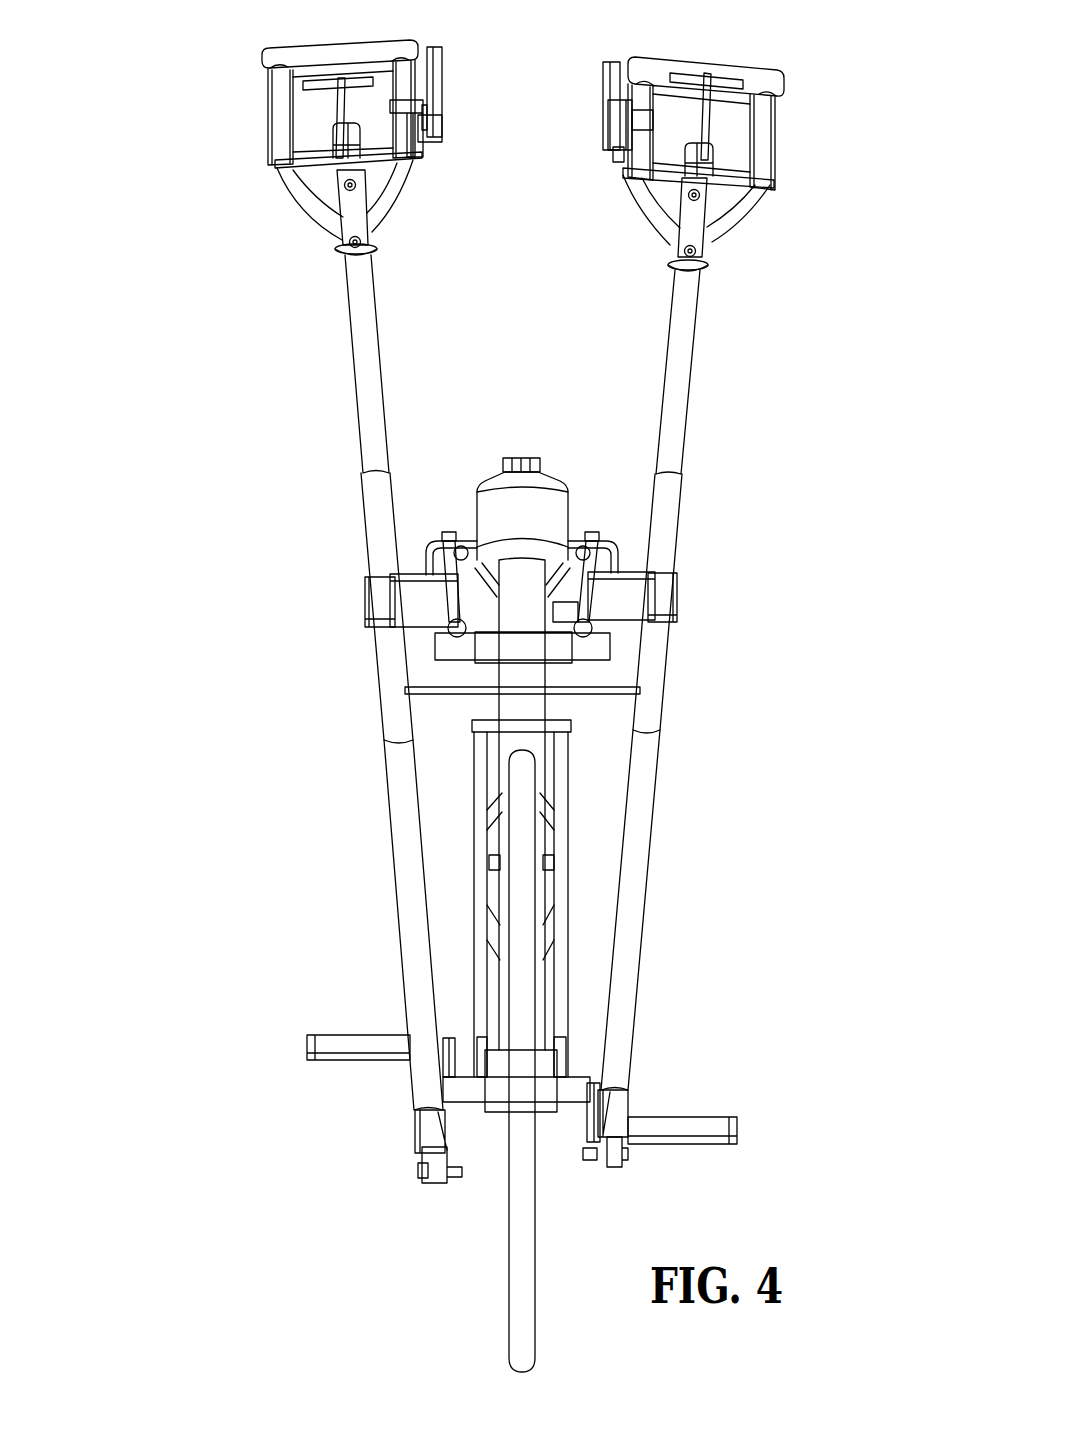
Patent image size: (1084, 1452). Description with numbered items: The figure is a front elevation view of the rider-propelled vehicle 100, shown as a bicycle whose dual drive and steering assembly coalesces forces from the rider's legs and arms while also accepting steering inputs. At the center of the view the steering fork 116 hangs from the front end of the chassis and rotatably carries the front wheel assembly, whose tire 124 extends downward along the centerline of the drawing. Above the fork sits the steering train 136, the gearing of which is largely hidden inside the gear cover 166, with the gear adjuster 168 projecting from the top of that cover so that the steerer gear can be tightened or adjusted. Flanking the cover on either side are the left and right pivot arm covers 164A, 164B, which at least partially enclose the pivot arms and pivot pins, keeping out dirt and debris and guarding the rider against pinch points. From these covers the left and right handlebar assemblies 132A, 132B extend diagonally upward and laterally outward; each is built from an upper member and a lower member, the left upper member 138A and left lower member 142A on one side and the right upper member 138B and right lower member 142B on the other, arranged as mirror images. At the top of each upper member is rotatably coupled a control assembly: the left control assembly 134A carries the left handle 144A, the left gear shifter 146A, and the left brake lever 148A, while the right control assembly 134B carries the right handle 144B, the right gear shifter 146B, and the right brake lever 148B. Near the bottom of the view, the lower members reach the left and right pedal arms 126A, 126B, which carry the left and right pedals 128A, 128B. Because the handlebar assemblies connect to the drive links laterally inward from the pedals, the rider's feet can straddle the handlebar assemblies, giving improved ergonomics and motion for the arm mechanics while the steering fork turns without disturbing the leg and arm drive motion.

The rider-propelled vehicle 100 is at (136, 86).
The steering fork 116 is at (580, 770).
The tire 124 is at (520, 1300).
The left pedal arm 126A is at (590, 1085).
The right pedal arm 126B is at (455, 1045).
The left pedal 128A is at (708, 1124).
The right pedal 128B is at (330, 1048).
The left handlebar assembly 132A is at (718, 340).
The right handlebar assembly 132B is at (328, 399).
The left control assembly 134A is at (803, 115).
The right control assembly 134B is at (262, 188).
The steering train 136 is at (578, 462).
The left upper member 138A is at (685, 388).
The right upper member 138B is at (360, 345).
The left lower member 142A is at (637, 905).
The right lower member 142B is at (395, 905).
The left handle 144A is at (745, 72).
The right handle 144B is at (305, 55).
The left gear shifter 146A is at (605, 90).
The right gear shifter 146B is at (430, 75).
The left brake lever 148A is at (705, 120).
The right brake lever 148B is at (345, 108).
The left pivot arm cover 164A is at (640, 582).
The right pivot arm cover 164B is at (415, 605).
The gear cover 166 is at (545, 515).
The gear adjuster 168 is at (510, 462).